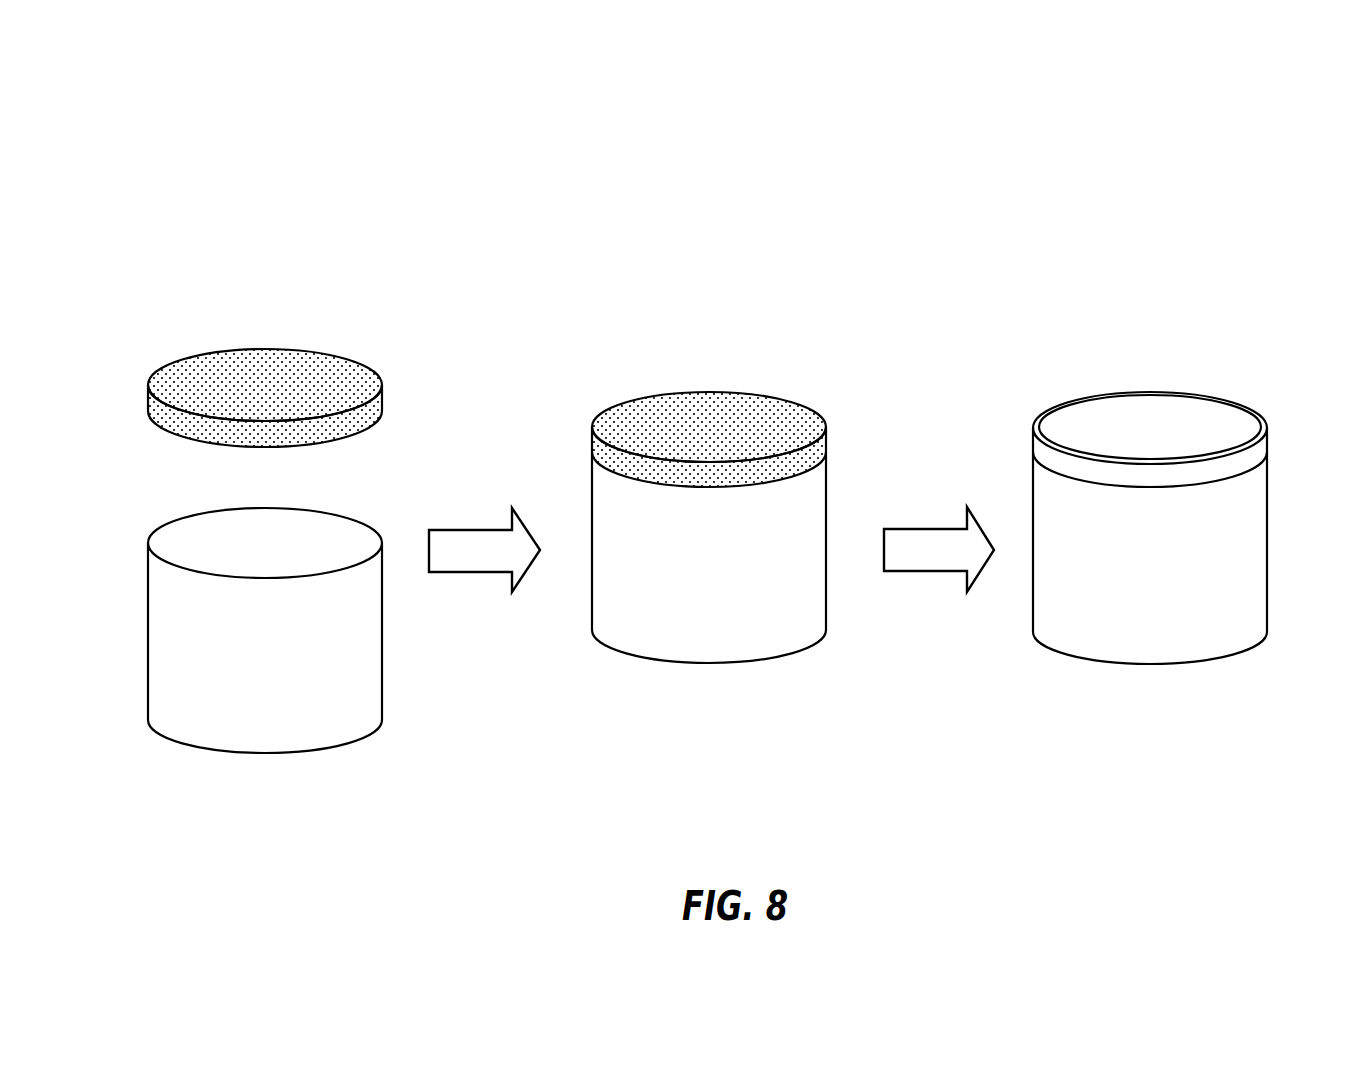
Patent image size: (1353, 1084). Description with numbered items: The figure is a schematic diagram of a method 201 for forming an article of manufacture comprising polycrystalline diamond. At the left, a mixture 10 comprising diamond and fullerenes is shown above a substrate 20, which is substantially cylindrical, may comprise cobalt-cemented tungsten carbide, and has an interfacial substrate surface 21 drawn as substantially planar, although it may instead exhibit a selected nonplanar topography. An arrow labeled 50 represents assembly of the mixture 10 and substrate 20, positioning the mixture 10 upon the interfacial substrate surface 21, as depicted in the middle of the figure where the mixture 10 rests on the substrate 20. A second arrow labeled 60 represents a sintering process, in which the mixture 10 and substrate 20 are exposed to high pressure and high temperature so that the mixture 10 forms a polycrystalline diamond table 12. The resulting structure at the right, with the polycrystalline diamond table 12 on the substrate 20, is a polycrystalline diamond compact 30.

The method 201 is at (1045, 168).
The mixture 10 is at (170, 346).
The polycrystalline diamond table 12 is at (1095, 422).
The substrate 20 is at (294, 718).
The interfacial substrate surface 21 is at (190, 538).
The polycrystalline diamond compact 30 is at (1260, 362).
The arrow representing assembly 50 is at (450, 530).
The arrow representing sintering process 60 is at (909, 529).